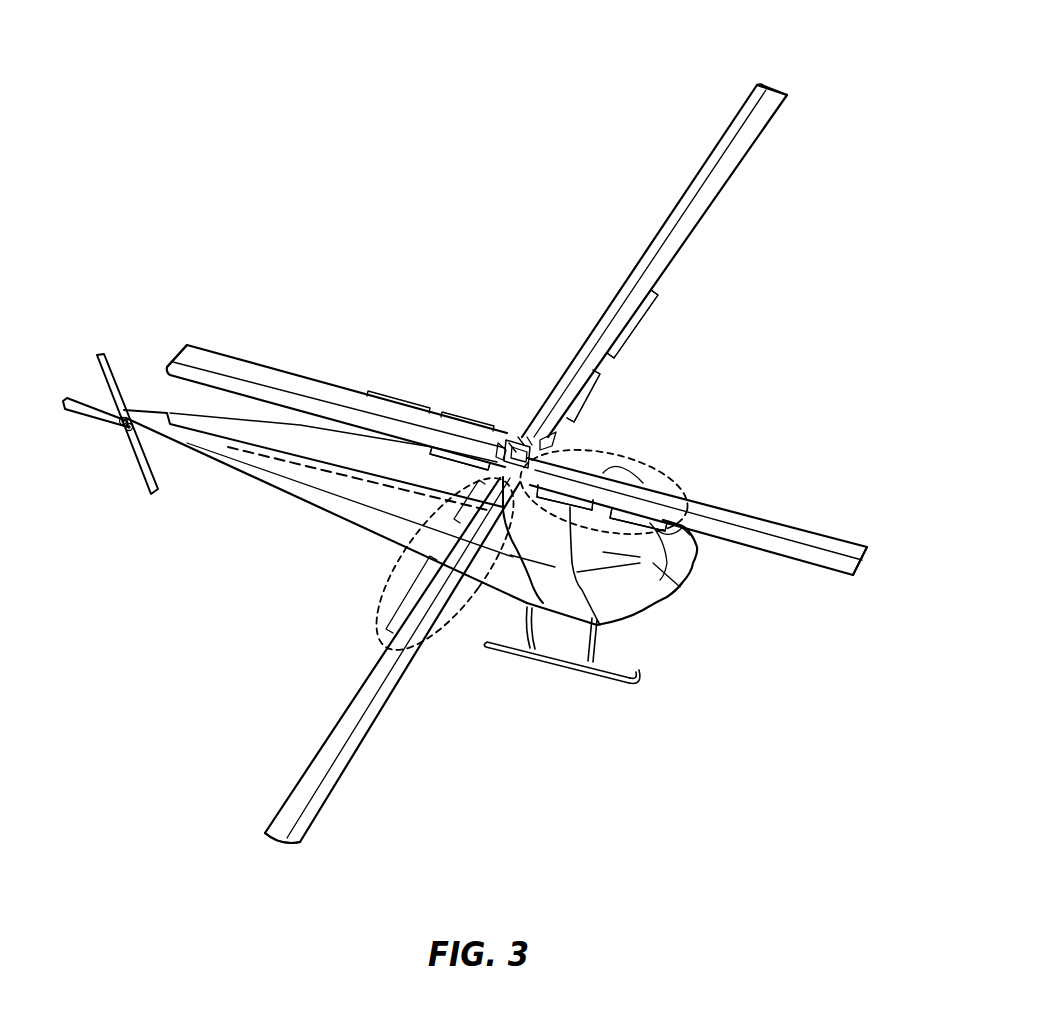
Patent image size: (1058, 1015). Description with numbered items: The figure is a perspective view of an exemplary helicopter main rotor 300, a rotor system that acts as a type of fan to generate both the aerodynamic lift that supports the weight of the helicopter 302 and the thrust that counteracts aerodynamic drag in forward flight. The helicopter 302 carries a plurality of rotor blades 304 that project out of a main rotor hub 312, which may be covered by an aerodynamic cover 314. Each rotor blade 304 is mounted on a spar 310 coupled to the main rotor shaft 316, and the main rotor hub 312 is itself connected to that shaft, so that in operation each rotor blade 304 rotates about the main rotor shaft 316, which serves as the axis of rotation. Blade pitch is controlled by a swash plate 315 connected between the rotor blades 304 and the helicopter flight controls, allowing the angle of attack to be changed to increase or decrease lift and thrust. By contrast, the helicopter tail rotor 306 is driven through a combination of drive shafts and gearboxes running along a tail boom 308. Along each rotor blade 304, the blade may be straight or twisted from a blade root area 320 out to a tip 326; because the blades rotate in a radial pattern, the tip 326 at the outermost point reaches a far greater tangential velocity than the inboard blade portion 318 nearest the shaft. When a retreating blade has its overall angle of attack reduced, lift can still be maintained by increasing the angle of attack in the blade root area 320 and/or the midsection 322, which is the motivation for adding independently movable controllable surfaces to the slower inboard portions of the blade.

The helicopter main rotor 300 is at (382, 188).
The helicopter 302 is at (353, 523).
The rotor blade 304 is at (173, 365).
The helicopter tail rotor 306 is at (94, 388).
The tail boom 308 is at (270, 462).
The spar 310 is at (533, 443).
The main rotor hub 312 is at (527, 447).
The aerodynamic cover 314 is at (513, 437).
The swash plate 315 is at (532, 440).
The main rotor shaft 316 is at (525, 437).
The inboard blade portion 318 is at (385, 630).
The blade root area 320 is at (503, 450).
The midsection 322 is at (690, 527).
The tip 326 is at (180, 348).